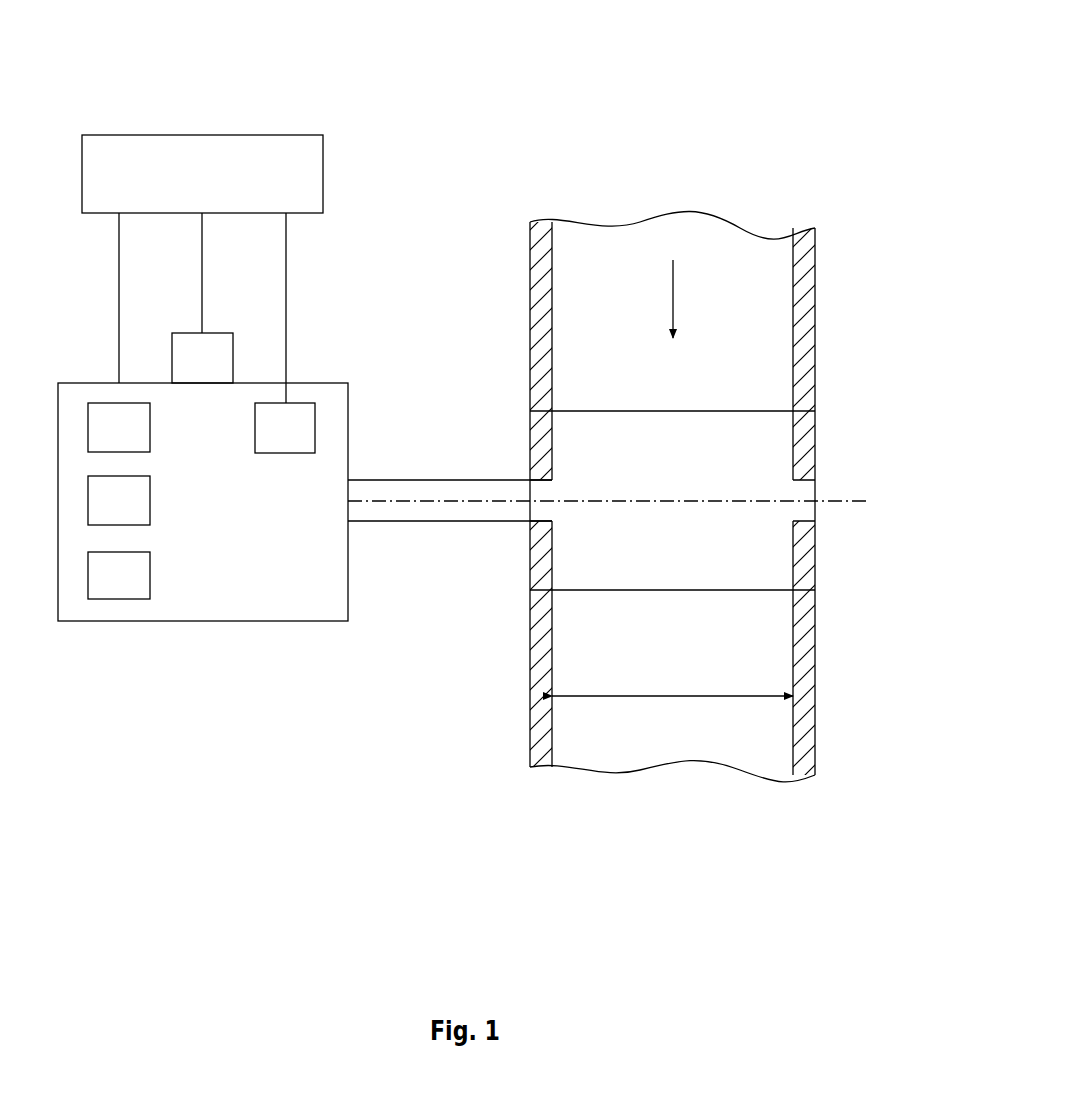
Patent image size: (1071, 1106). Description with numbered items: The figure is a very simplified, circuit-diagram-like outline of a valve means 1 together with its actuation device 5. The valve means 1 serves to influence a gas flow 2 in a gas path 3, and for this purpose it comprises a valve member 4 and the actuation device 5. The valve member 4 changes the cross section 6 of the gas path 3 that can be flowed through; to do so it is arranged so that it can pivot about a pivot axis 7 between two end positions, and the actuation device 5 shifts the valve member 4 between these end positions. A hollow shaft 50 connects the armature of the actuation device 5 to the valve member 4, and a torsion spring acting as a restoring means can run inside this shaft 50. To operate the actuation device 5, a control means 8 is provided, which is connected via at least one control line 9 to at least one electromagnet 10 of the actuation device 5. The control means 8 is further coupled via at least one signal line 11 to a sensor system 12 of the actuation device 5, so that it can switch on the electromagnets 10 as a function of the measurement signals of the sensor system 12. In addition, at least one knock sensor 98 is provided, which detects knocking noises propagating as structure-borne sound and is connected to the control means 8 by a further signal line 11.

The valve means 1 is at (828, 165).
The gas flow 2 is at (682, 290).
The gas path 3 is at (592, 332).
The valve member 4 is at (664, 462).
The actuation device 5 is at (202, 626).
The cross section 6 is at (672, 698).
The pivot axis 7 is at (860, 500).
The control means 8 is at (194, 185).
The control line 9 is at (119, 308).
The electromagnet 10 is at (105, 439).
The signal line 11 is at (204, 300).
The sensor system 12 is at (271, 439).
The shaft 50 is at (448, 478).
The knock sensor 98 is at (188, 369).